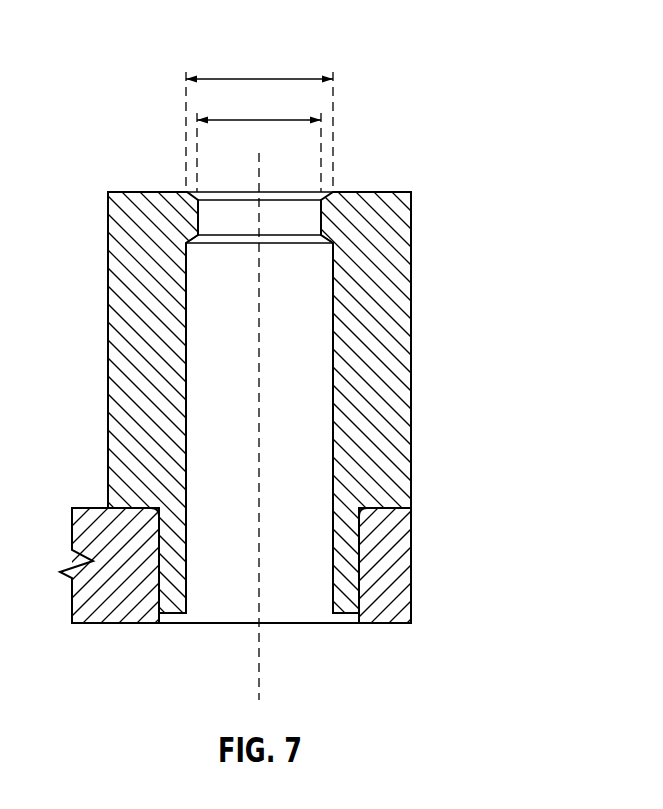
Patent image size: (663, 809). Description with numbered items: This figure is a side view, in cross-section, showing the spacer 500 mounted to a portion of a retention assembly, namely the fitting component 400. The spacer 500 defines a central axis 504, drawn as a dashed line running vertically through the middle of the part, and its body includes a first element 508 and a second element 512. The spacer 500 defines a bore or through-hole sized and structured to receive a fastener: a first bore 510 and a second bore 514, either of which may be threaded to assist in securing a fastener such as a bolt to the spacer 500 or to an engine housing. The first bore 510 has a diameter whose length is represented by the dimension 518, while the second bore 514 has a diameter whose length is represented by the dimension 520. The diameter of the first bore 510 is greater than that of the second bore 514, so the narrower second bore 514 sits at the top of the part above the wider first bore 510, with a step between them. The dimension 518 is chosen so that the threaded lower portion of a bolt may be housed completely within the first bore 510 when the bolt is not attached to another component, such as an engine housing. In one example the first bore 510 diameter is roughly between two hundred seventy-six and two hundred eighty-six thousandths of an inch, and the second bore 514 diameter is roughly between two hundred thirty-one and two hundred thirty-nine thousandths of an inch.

The spacer 500 is at (424, 145).
The central axis 504 is at (260, 181).
The first element 508 is at (360, 553).
The first bore 510 is at (333, 396).
The second element 512 is at (411, 316).
The second bore 514 is at (318, 228).
The dimension 518 is at (260, 78).
The dimension 520 is at (258, 119).
The fitting component 400 is at (411, 546).